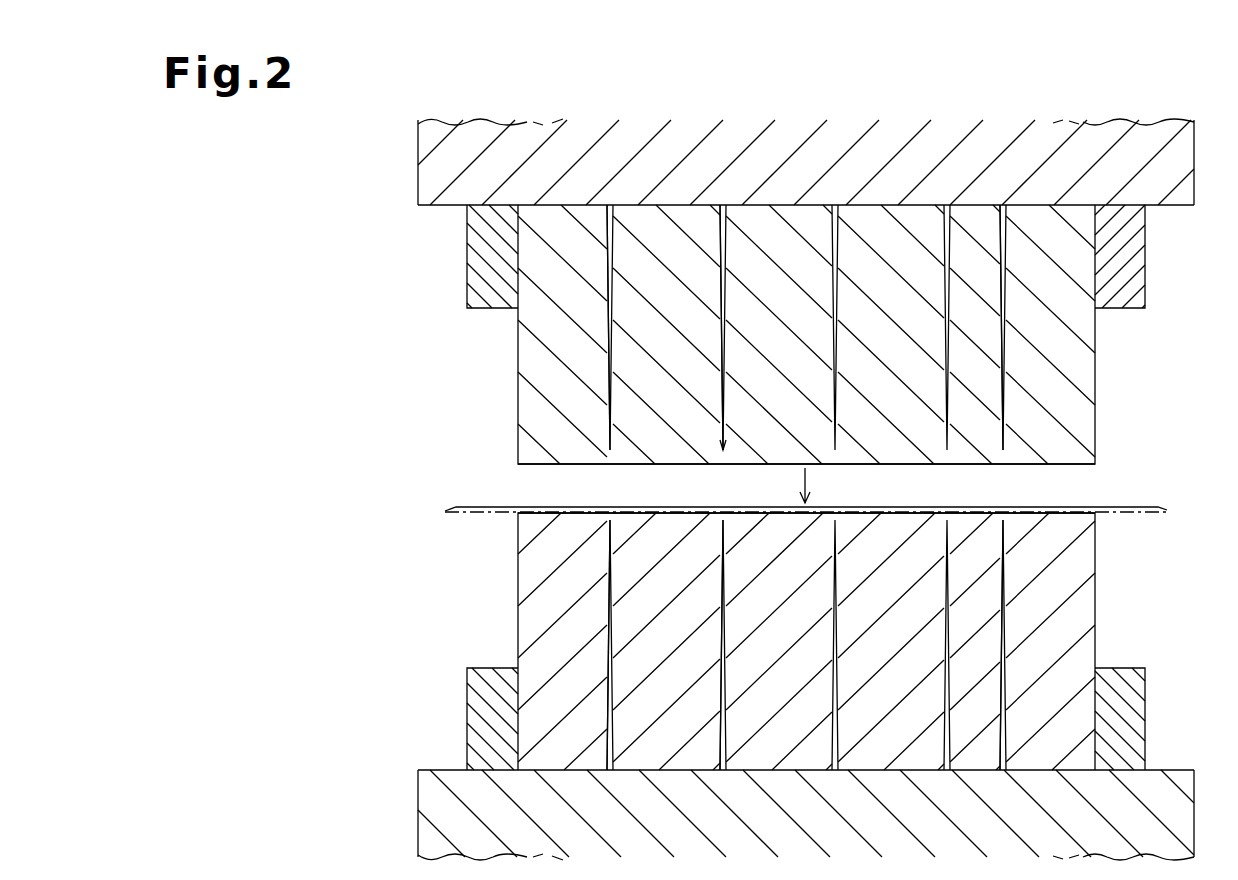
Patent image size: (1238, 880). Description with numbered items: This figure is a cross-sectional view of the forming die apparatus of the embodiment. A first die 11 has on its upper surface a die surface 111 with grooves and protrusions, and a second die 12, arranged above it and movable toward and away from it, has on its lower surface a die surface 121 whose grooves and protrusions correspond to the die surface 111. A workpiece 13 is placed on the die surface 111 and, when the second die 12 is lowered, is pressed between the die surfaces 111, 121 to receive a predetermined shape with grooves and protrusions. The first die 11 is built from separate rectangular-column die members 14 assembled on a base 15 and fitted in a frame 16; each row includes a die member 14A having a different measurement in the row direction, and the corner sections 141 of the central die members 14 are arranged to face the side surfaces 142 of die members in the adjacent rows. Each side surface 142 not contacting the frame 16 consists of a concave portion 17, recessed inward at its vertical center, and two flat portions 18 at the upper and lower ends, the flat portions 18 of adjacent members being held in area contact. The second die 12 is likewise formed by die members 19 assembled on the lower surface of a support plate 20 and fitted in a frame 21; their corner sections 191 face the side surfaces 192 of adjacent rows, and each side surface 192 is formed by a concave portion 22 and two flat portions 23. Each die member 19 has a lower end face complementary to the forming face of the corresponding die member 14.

The first die 11 is at (1151, 619).
The die surface 111 is at (535, 512).
The second die 12 is at (1151, 392).
The die surface 121 is at (522, 475).
The workpiece 13 is at (1140, 508).
The die members 14 is at (627, 772).
The corner sections 141 is at (617, 516).
The side surfaces 142 is at (723, 790).
The die member 14A is at (968, 522).
The base 15 is at (1177, 783).
The frame 16 is at (1138, 696).
The concave portion 17 is at (722, 630).
The flat portions 18 is at (608, 520).
The die members 19 is at (627, 206).
The corner sections 191 is at (740, 466).
The side surfaces 192 is at (723, 186).
The support plate 20 is at (1176, 193).
The frame 21 is at (1140, 280).
The concave portion 22 is at (722, 340).
The flat portions 23 is at (608, 210).